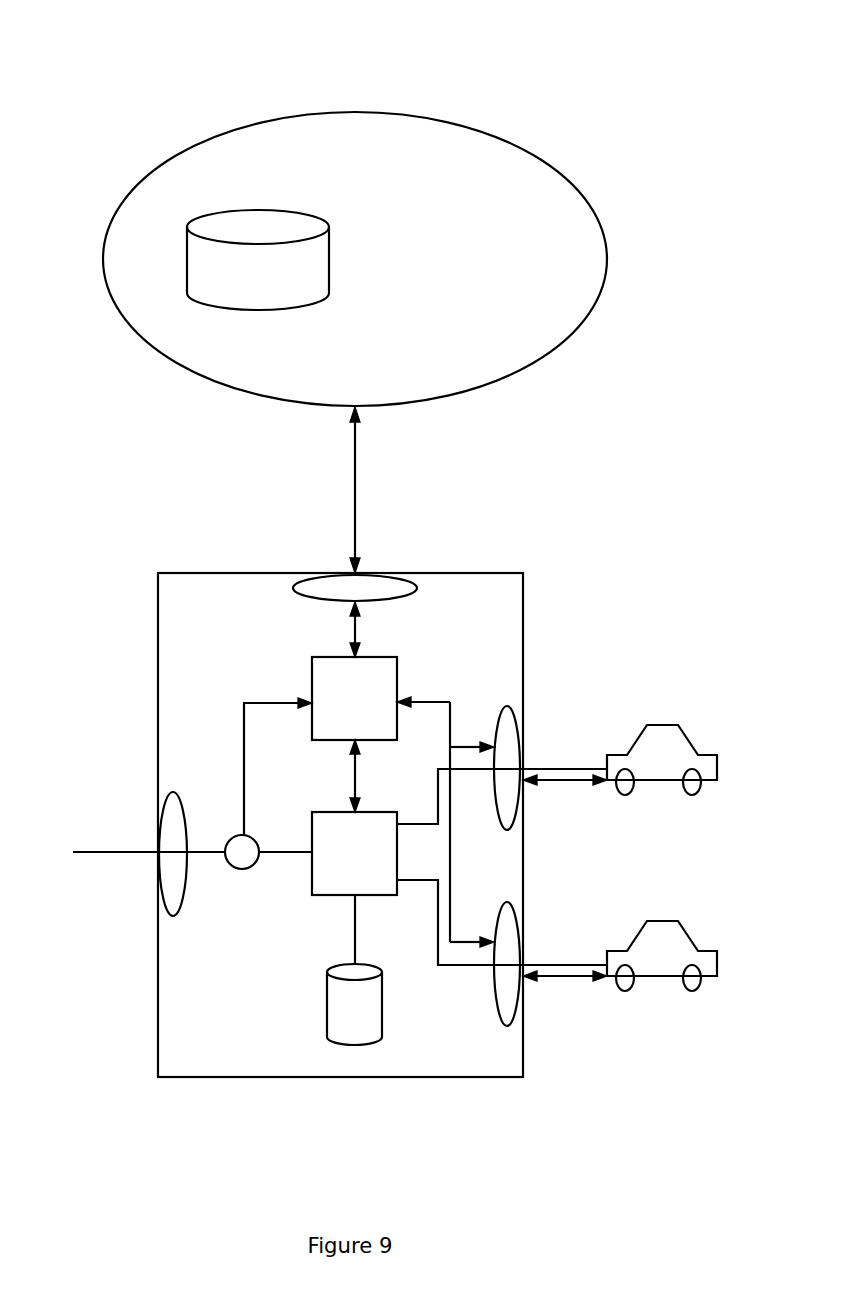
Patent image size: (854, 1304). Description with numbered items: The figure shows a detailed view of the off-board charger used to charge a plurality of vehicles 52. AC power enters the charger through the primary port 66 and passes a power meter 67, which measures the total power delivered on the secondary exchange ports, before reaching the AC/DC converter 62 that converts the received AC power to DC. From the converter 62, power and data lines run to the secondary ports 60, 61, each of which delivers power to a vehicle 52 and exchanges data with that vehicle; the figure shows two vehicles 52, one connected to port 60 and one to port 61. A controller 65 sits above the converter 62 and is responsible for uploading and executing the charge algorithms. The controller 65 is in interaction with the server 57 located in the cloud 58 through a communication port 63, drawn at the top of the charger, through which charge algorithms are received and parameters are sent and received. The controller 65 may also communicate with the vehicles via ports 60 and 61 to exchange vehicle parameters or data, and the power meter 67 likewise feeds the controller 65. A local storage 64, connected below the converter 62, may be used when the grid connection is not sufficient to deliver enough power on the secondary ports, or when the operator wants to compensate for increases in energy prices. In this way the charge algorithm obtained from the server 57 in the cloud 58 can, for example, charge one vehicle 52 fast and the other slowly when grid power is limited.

The vehicle 52 is at (655, 722).
The server 57 is at (330, 257).
The cloud 58 is at (297, 152).
The secondary port 60 is at (508, 710).
The secondary port 61 is at (520, 1012).
The AC/DC converter 62 is at (354, 853).
The communication port 63 is at (377, 583).
The local storage 64 is at (355, 1020).
The controller 65 is at (354, 698).
The primary port 66 is at (159, 877).
The power meter 67 is at (228, 838).